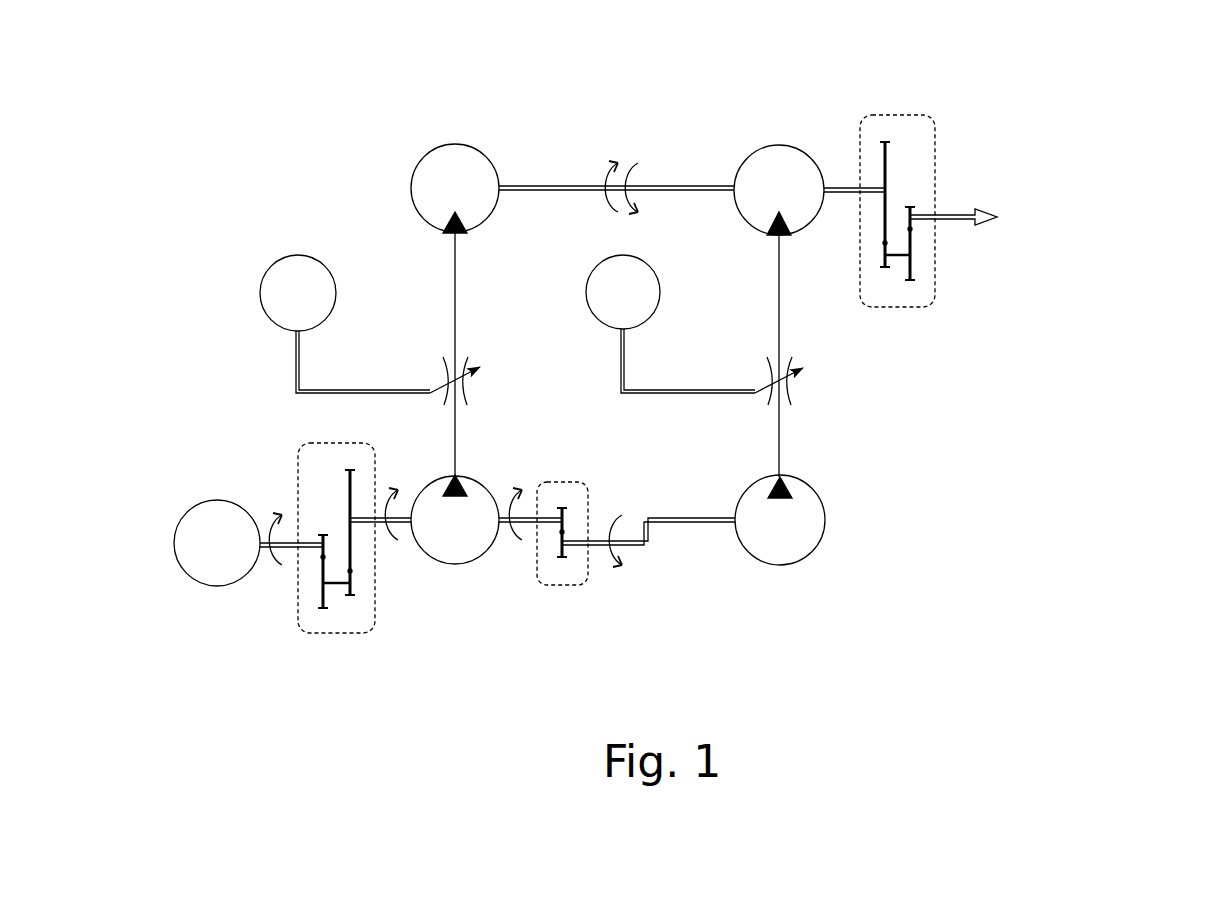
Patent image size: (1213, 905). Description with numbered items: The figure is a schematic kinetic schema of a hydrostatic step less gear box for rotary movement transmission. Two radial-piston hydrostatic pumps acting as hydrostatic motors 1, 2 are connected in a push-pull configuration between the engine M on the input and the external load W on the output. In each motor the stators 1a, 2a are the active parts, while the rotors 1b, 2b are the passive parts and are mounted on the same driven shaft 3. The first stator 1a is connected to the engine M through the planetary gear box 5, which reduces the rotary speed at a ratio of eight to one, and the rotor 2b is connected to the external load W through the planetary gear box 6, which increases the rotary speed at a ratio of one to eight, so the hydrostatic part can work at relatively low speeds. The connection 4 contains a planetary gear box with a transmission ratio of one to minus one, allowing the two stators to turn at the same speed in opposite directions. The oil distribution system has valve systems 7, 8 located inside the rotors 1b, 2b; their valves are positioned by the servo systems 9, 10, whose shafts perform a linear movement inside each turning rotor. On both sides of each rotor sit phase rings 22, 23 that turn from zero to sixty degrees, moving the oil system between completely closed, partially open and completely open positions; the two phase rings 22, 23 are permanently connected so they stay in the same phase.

The hydrostatic motor 1 is at (448, 328).
The stator 1a is at (453, 547).
The rotor 1b is at (455, 160).
The hydrostatic motor 2 is at (790, 314).
The stator 2a is at (788, 545).
The rotor 2b is at (763, 167).
The driven shaft 3 is at (658, 188).
The connection 4 is at (575, 563).
The planetary gear box 5 is at (307, 595).
The planetary gear box 6 is at (915, 150).
The valve system 7 is at (533, 402).
The valve system 8 is at (938, 427).
The servo system 9 is at (300, 307).
The servo system 10 is at (609, 292).
The phase ring 22 is at (480, 396).
The phase ring 23 is at (1115, 490).
The engine M is at (237, 573).
The external load W is at (990, 208).